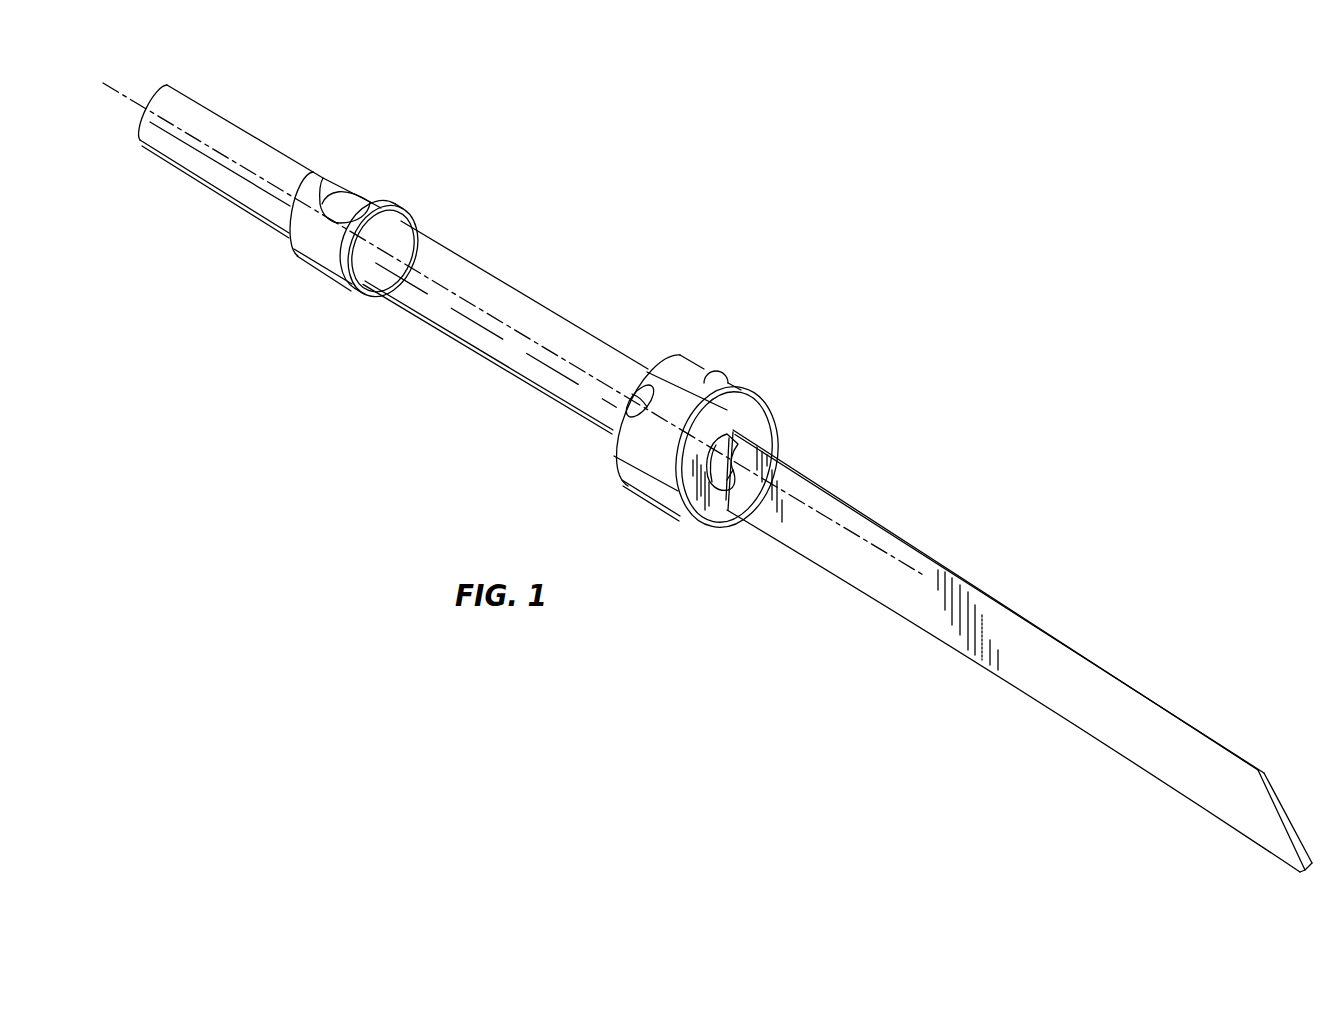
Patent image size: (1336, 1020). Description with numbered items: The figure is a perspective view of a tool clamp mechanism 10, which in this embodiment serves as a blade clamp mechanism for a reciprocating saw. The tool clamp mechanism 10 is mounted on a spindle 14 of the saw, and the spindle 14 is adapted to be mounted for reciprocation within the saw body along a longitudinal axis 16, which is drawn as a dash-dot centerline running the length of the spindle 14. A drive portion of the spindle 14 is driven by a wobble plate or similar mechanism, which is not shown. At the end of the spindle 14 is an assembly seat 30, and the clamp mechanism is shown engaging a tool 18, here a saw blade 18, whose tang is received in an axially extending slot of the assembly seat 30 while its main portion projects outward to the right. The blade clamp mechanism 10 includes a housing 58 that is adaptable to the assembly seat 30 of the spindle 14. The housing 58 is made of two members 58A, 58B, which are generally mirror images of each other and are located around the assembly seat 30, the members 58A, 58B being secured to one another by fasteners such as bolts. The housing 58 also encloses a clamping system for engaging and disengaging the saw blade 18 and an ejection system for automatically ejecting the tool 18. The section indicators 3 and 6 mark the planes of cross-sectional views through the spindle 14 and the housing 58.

The tool clamp mechanism 10 is at (902, 250).
The spindle 14 is at (437, 307).
The longitudinal axis 16 is at (205, 160).
The saw blade 18 is at (1068, 648).
The assembly seat 30 is at (720, 495).
The housing 58 is at (684, 415).
The first housing member 58A is at (610, 453).
The second housing member 58B is at (761, 432).
The section line 3 is at (790, 383).
The section line 6 is at (576, 374).